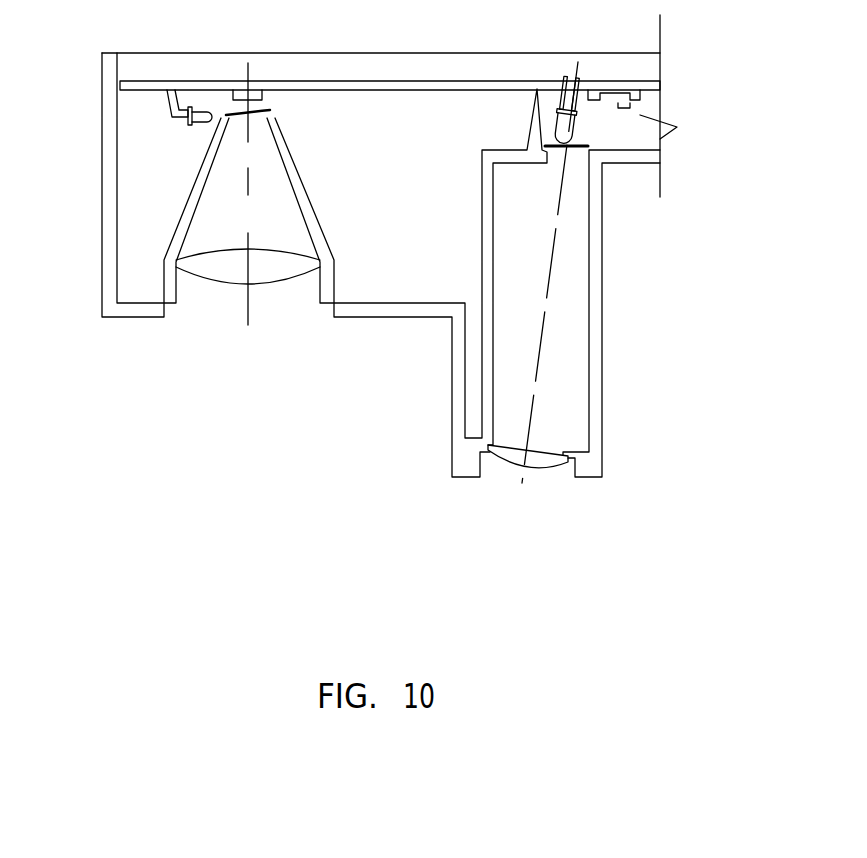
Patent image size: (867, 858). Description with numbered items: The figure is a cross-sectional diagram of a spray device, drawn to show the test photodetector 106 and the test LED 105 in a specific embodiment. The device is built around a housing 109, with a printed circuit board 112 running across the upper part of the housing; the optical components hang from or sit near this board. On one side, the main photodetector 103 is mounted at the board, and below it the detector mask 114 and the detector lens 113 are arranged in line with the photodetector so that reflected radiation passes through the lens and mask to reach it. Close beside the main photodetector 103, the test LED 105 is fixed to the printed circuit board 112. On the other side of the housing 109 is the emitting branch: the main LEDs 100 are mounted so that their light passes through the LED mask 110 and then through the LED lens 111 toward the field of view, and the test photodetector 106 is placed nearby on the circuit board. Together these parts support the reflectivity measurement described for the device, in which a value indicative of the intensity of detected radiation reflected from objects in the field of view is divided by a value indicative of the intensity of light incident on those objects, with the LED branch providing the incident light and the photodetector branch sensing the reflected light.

The main LED 100 is at (575, 128).
The main photodetector 103 is at (240, 90).
The test LED 105 is at (193, 126).
The test photodetector 106 is at (640, 115).
The housing 109 is at (102, 118).
The LED mask 110 is at (565, 150).
The LED lens 111 is at (542, 466).
The printed circuit board 112 is at (383, 80).
The detector lens 113 is at (225, 284).
The detector mask 114 is at (272, 113).